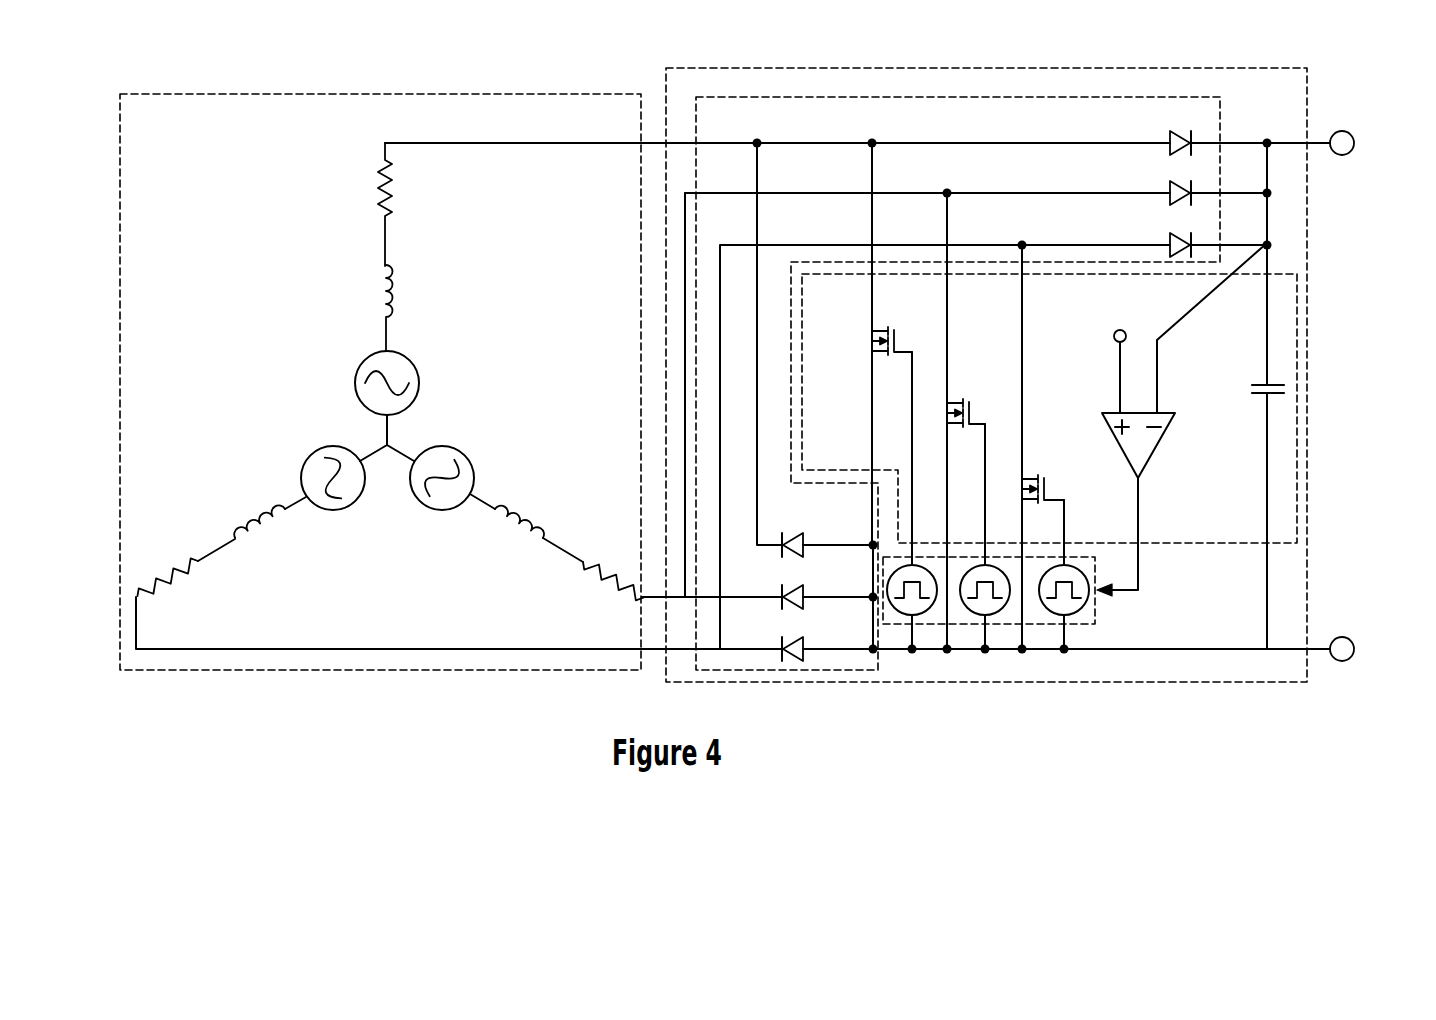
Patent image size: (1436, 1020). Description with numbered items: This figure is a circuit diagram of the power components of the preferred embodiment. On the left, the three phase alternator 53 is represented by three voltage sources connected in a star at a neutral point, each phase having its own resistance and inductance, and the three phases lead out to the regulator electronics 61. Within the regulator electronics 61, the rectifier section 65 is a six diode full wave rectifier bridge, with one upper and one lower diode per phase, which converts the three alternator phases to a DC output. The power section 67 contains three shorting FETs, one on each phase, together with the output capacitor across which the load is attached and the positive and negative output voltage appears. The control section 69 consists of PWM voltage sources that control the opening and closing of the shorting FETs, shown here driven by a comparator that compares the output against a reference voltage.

The three phase alternator 53 is at (392, 94).
The regulator electronics 61 is at (1105, 67).
The rectifier section 65 is at (1177, 97).
The power section 67 is at (1268, 357).
The control section 69 is at (1095, 607).